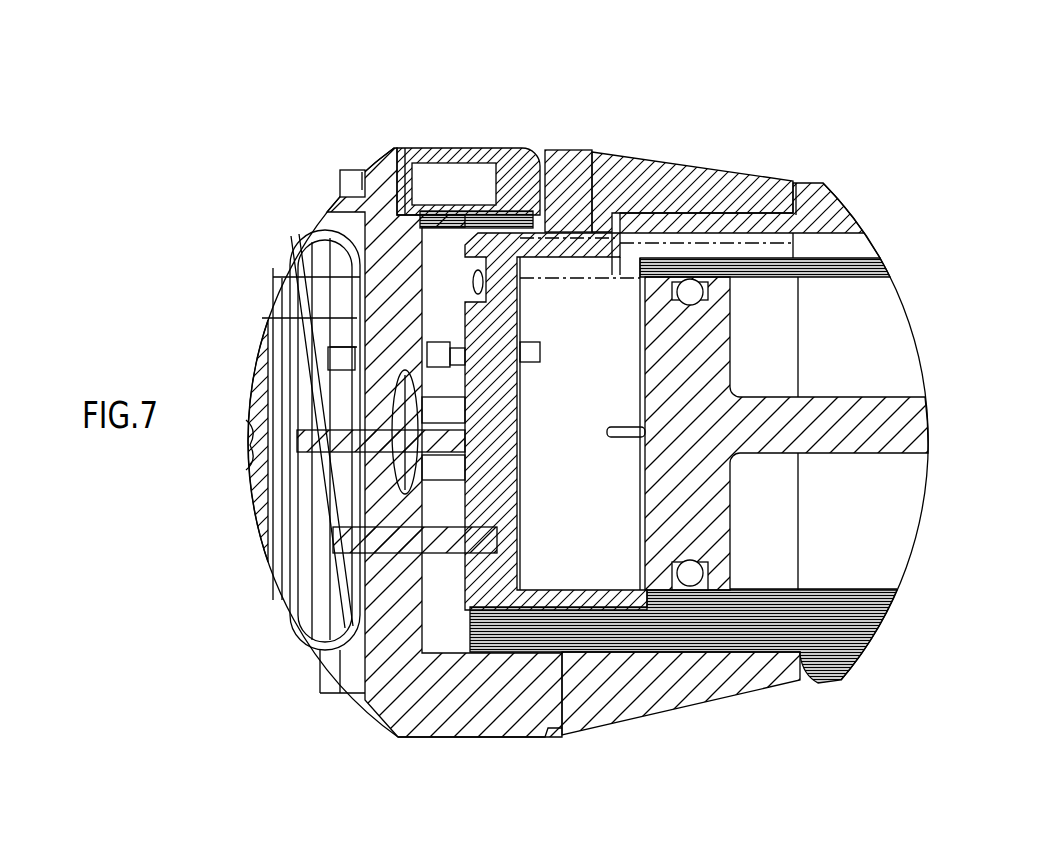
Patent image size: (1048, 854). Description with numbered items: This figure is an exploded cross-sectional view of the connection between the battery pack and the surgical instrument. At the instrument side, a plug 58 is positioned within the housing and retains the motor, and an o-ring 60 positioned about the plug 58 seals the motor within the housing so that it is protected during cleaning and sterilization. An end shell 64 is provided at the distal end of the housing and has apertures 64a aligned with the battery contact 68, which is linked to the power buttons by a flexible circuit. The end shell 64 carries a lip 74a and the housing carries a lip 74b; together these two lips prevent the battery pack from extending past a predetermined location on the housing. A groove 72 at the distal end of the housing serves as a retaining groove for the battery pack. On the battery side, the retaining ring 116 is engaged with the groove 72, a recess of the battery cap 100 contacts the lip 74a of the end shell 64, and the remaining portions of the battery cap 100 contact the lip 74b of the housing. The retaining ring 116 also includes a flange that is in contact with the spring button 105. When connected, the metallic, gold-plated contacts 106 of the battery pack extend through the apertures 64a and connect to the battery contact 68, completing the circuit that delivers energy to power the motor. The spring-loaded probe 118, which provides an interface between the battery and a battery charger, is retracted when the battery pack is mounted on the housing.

The plug 58 is at (887, 427).
The o-ring 60 is at (688, 288).
The end shell 64 is at (780, 186).
The apertures 64a is at (520, 358).
The battery contact 68 is at (530, 352).
The groove 72 is at (470, 737).
The lip 74a is at (605, 155).
The lip 74b is at (827, 682).
The battery cap 100 is at (525, 740).
The spring button 105 is at (457, 183).
The contacts 106 is at (437, 356).
The retaining ring 116 is at (490, 148).
The probe 118 is at (345, 615).